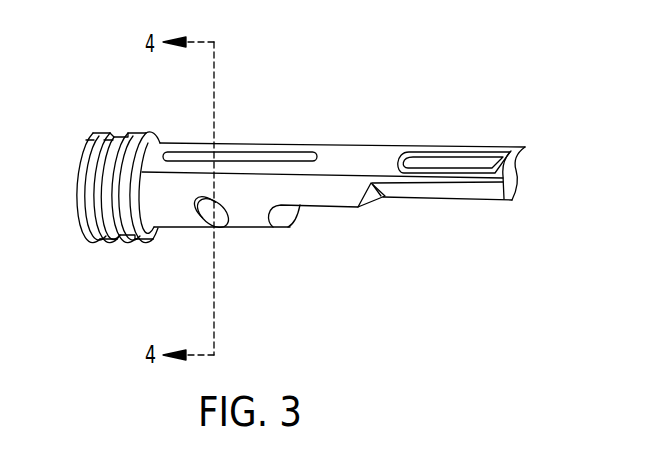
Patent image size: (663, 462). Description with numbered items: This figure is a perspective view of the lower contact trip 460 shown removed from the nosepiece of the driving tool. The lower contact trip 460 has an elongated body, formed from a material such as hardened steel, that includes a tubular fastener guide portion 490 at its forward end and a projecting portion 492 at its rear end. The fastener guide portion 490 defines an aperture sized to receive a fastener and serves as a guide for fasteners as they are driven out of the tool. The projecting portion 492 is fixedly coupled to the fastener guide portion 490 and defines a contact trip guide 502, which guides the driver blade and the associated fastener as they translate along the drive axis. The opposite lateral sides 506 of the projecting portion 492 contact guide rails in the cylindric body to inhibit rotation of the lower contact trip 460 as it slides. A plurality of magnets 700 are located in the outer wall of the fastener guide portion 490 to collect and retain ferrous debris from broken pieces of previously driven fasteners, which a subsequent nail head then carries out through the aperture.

The lower contact trip 460 is at (100, 262).
The fastener guide portion 490 is at (148, 172).
The projecting portion 492 is at (458, 193).
The contact trip guide 502 is at (528, 156).
The opposite lateral sides 506 is at (463, 147).
The magnets 700 is at (208, 230).